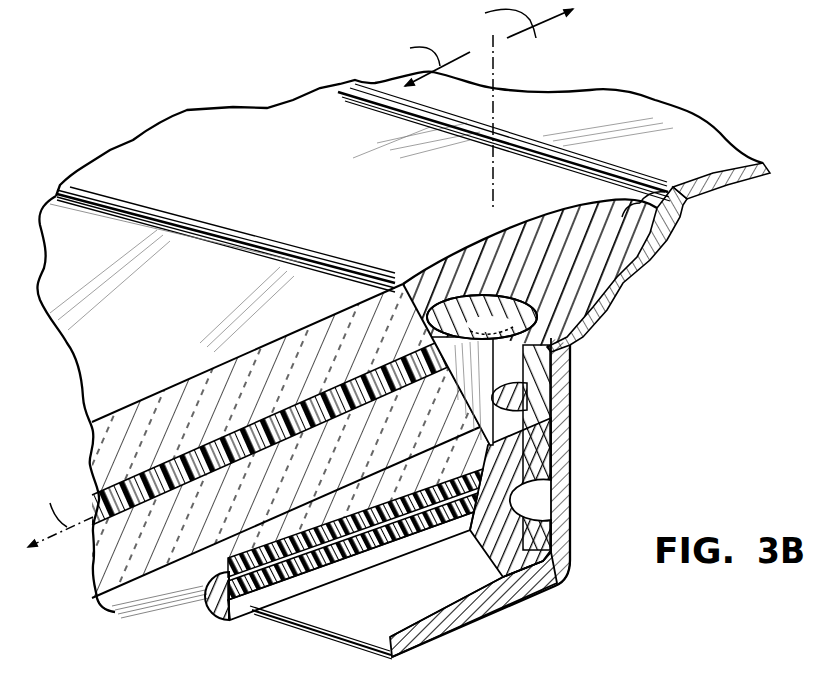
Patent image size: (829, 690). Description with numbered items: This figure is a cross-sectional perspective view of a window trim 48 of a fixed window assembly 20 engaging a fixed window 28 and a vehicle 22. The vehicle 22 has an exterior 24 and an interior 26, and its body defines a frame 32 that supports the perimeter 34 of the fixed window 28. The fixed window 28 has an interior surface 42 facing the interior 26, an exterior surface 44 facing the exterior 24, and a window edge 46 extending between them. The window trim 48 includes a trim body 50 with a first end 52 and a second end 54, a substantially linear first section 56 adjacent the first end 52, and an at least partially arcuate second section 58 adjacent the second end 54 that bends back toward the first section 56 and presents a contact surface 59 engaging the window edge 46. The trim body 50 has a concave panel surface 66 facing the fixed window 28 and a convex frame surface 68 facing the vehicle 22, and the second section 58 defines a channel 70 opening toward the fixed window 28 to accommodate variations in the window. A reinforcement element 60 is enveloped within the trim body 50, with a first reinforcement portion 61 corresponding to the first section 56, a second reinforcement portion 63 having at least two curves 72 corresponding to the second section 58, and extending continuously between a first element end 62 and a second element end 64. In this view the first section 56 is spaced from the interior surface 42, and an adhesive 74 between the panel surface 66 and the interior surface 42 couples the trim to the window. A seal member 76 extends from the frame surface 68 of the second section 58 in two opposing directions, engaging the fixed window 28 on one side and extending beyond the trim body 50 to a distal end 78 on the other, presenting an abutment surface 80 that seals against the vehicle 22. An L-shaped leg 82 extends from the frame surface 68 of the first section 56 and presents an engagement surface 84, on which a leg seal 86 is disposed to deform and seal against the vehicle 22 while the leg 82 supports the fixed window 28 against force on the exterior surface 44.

The fixed window assembly 20 is at (590, 40).
The vehicle 22 is at (677, 120).
The exterior 24 is at (36, 166).
The interior 26 is at (225, 673).
The fixed window 28 is at (50, 277).
The frame 32 is at (527, 380).
The perimeter 34 is at (553, 500).
The interior surface 42 is at (107, 598).
The exterior surface 44 is at (135, 321).
The window edge 46 is at (432, 300).
The window trim 48 is at (243, 87).
The trim body 50 is at (553, 423).
The first end 52 is at (200, 603).
The second end 54 is at (418, 322).
The first section 56 is at (363, 530).
The second section 58 is at (523, 357).
The contact surface 59 is at (446, 331).
The reinforcement element 60 is at (407, 510).
The first reinforcement portion 61 is at (413, 472).
The first element end 62 is at (247, 587).
The second reinforcement portion 63 is at (590, 310).
The second element end 64 is at (470, 320).
The panel surface 66 is at (313, 540).
The frame surface 68 is at (570, 440).
The channel 70 is at (540, 403).
The curves 72 is at (555, 352).
The adhesive 74 is at (250, 585).
The seal member 76 is at (537, 242).
The distal end 78 is at (658, 203).
The abutment surface 80 is at (637, 260).
The leg 82 is at (490, 547).
The engagement surface 84 is at (552, 587).
The leg seal 86 is at (510, 620).